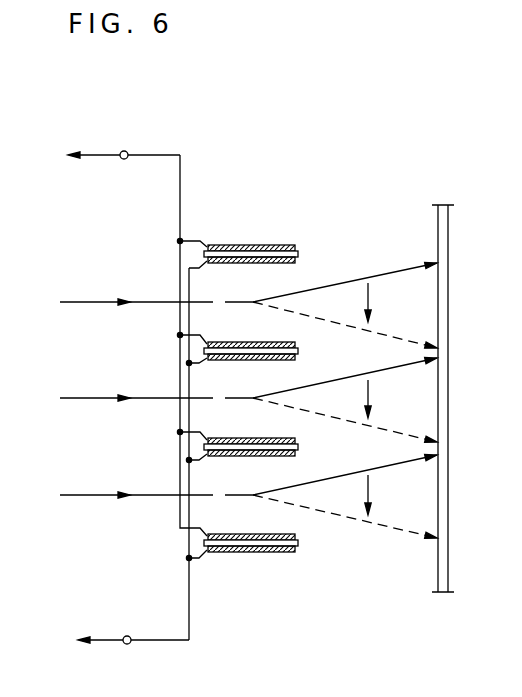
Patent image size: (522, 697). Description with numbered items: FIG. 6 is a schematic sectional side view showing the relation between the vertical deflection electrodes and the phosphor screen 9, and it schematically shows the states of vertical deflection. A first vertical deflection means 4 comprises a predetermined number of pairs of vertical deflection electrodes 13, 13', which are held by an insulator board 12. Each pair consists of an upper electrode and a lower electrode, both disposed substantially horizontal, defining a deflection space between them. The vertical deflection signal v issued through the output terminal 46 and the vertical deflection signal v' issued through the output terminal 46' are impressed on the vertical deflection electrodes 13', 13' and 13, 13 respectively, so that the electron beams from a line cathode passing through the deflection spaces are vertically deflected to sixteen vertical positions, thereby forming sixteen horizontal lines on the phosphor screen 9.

The first vertical deflection means 4 is at (160, 278).
The phosphor screen 9 is at (446, 222).
The insulator board 12 is at (298, 254).
The vertical deflection electrode 13 is at (272, 376).
The vertical deflection electrode 13' is at (278, 425).
The output terminal 46 is at (104, 151).
The output terminal 46' is at (113, 637).